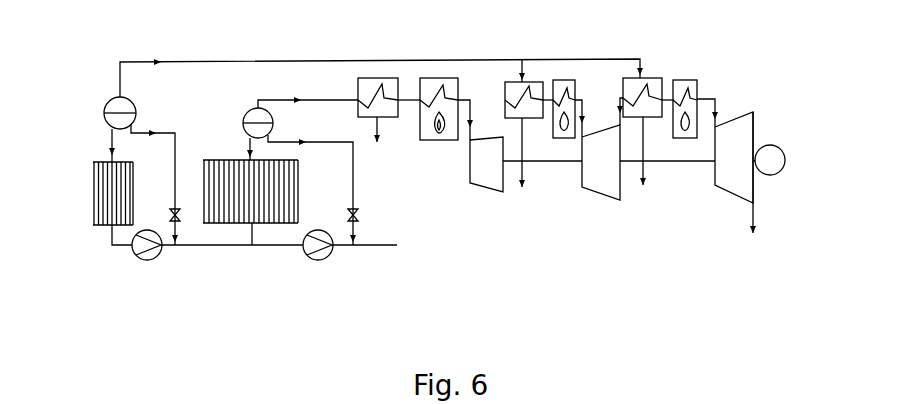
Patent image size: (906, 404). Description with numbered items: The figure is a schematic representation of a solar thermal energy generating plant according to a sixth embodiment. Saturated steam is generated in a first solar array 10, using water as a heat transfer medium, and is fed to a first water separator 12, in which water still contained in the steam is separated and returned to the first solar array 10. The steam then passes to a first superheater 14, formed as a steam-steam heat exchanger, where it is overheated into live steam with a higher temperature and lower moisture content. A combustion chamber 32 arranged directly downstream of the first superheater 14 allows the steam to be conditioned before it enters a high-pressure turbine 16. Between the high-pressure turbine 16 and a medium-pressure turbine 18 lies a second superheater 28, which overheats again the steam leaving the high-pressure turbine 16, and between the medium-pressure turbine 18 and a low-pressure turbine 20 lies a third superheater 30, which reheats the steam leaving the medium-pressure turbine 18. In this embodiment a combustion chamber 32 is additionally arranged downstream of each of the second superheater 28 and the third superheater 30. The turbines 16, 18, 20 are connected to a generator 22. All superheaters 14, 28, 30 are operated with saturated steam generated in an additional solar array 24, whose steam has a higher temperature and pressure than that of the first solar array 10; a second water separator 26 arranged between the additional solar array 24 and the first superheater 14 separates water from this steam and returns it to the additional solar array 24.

The first solar array 10 is at (218, 158).
The first water separator 12 is at (244, 110).
The first superheater 14 is at (396, 118).
The high-pressure turbine 16 is at (482, 193).
The medium-pressure turbine 18 is at (590, 190).
The low-pressure turbine 20 is at (729, 193).
The generator 22 is at (768, 145).
The additional solar array 24 is at (93, 162).
The second water separator 26 is at (106, 99).
The second superheater 28 is at (505, 83).
The third superheater 30 is at (648, 78).
The combustion chamber 32 is at (432, 140).